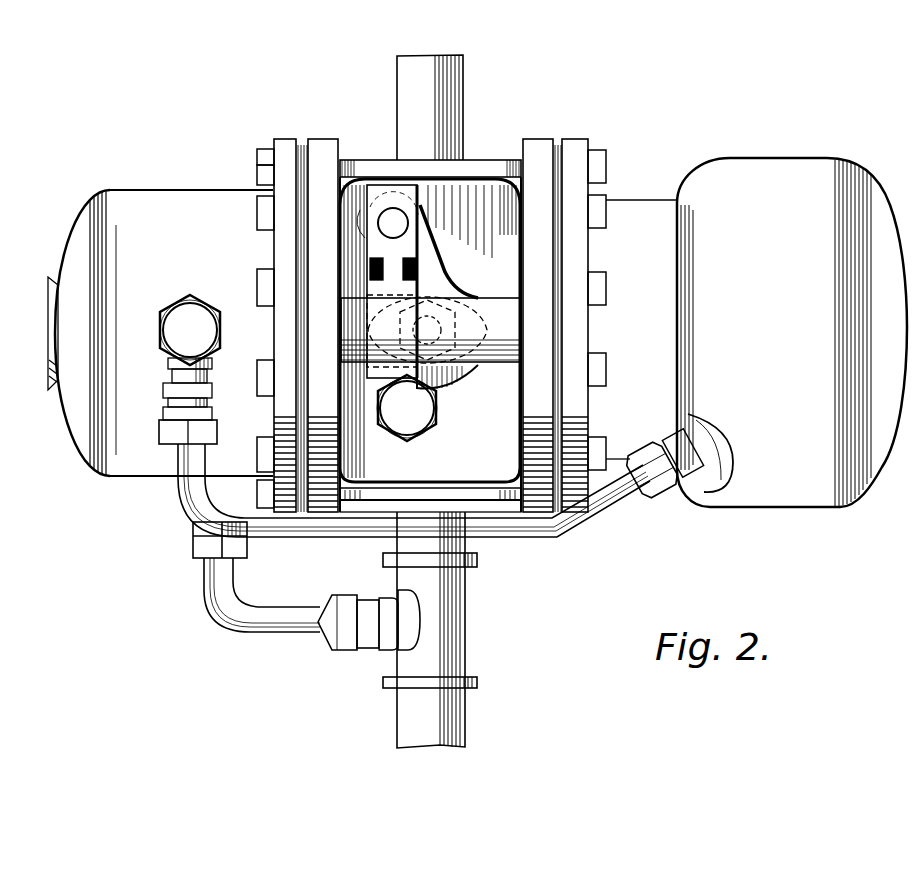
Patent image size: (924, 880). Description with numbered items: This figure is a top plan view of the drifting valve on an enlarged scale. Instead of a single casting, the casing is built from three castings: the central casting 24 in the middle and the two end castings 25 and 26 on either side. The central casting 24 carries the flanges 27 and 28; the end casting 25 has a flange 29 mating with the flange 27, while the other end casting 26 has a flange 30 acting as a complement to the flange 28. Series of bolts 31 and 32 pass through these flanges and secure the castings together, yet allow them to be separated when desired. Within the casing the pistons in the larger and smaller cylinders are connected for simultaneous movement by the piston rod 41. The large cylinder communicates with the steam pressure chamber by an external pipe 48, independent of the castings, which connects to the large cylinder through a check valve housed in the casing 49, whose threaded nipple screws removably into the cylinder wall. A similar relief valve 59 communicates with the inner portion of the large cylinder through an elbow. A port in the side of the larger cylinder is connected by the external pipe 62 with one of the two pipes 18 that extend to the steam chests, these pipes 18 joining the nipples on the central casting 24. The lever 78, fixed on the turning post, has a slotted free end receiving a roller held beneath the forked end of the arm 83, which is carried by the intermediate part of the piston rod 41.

The pipes 18 is at (445, 73).
The central casting 24 is at (468, 165).
The end casting 25 is at (160, 190).
The other end casting 26 is at (760, 162).
The flange 27 is at (325, 142).
The flange 28 is at (545, 140).
The flange 29 is at (281, 140).
The flange 30 is at (578, 142).
The series of bolts 31 is at (262, 152).
The series of bolts 32 is at (597, 170).
The piston rod 41 is at (502, 338).
The external pipe 48 is at (537, 530).
The casing 49 is at (175, 308).
The relief valve 59 is at (400, 434).
The pipe 62 is at (258, 612).
The lever 78 is at (446, 276).
The arm 83 is at (410, 243).